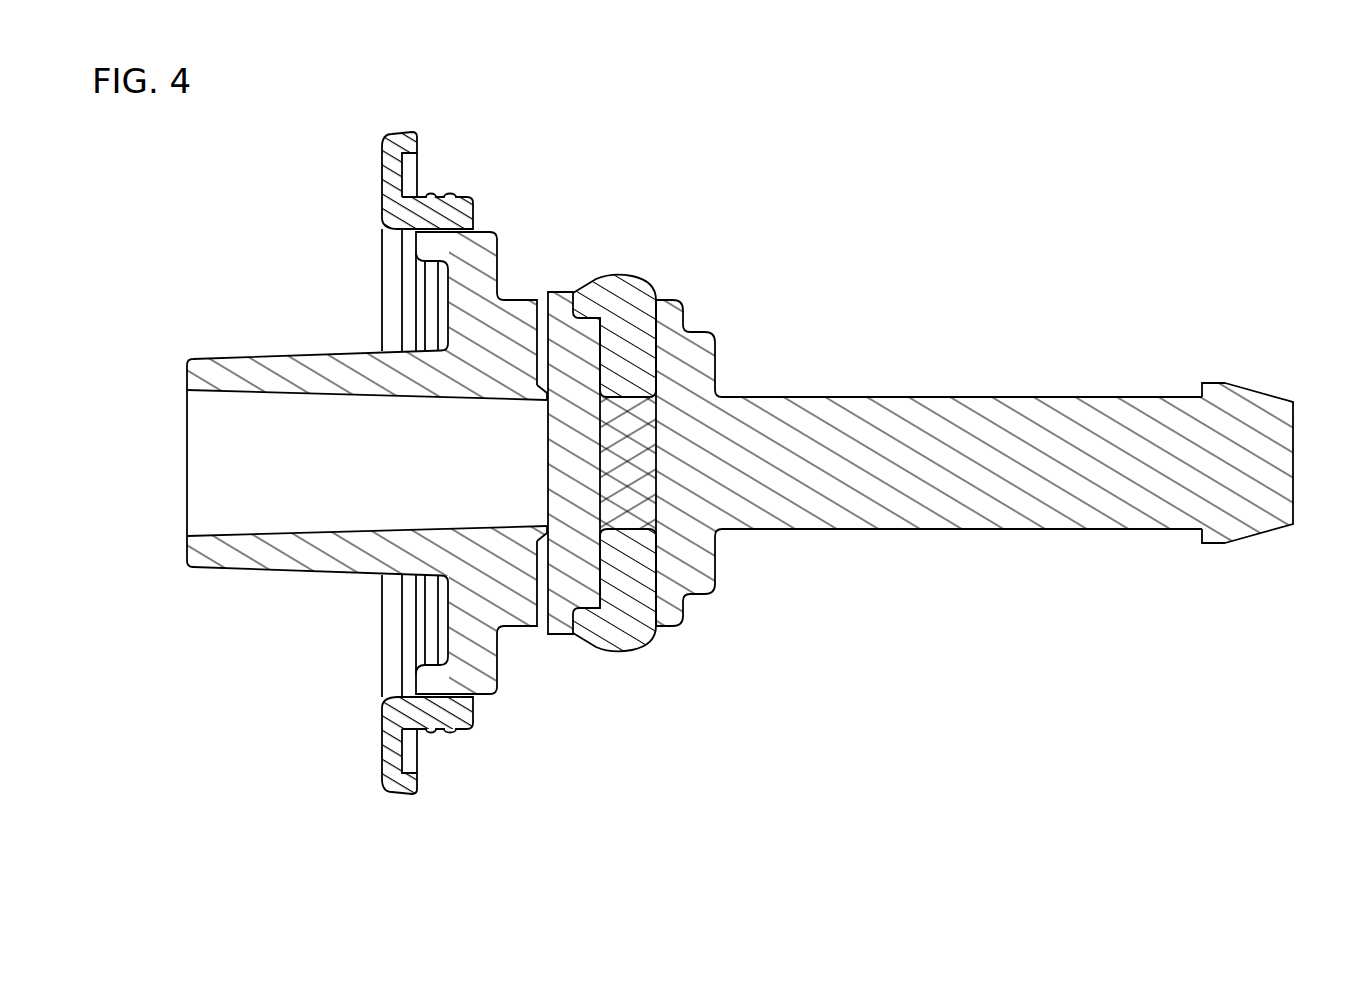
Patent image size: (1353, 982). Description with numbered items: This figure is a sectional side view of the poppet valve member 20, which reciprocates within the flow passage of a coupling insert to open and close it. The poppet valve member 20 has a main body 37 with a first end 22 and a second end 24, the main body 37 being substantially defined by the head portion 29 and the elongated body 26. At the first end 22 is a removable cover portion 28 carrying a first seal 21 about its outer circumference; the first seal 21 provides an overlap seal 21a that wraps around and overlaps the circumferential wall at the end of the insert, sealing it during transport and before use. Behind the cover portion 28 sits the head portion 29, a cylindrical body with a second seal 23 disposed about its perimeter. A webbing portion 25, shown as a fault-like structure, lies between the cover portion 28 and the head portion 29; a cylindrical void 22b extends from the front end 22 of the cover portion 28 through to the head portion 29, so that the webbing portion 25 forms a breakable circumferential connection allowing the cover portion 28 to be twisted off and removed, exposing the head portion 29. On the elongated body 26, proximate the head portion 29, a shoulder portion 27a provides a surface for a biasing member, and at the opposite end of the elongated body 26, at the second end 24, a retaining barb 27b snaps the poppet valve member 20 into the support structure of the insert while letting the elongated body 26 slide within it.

The poppet valve member 20 is at (807, 288).
The first seal 21 is at (457, 730).
The overlap seal 21a is at (382, 170).
The first end 22 is at (189, 563).
The void 22b is at (230, 447).
The second seal 23 is at (652, 642).
The second end 24 is at (1293, 505).
The webbing portion 25 is at (542, 531).
The elongated body 26 is at (872, 396).
The shoulder portion 27a is at (715, 368).
The retaining barb 27b is at (1200, 383).
The removable cover portion 28 is at (480, 232).
The head portion 29 is at (565, 292).
The main body 37 is at (803, 520).